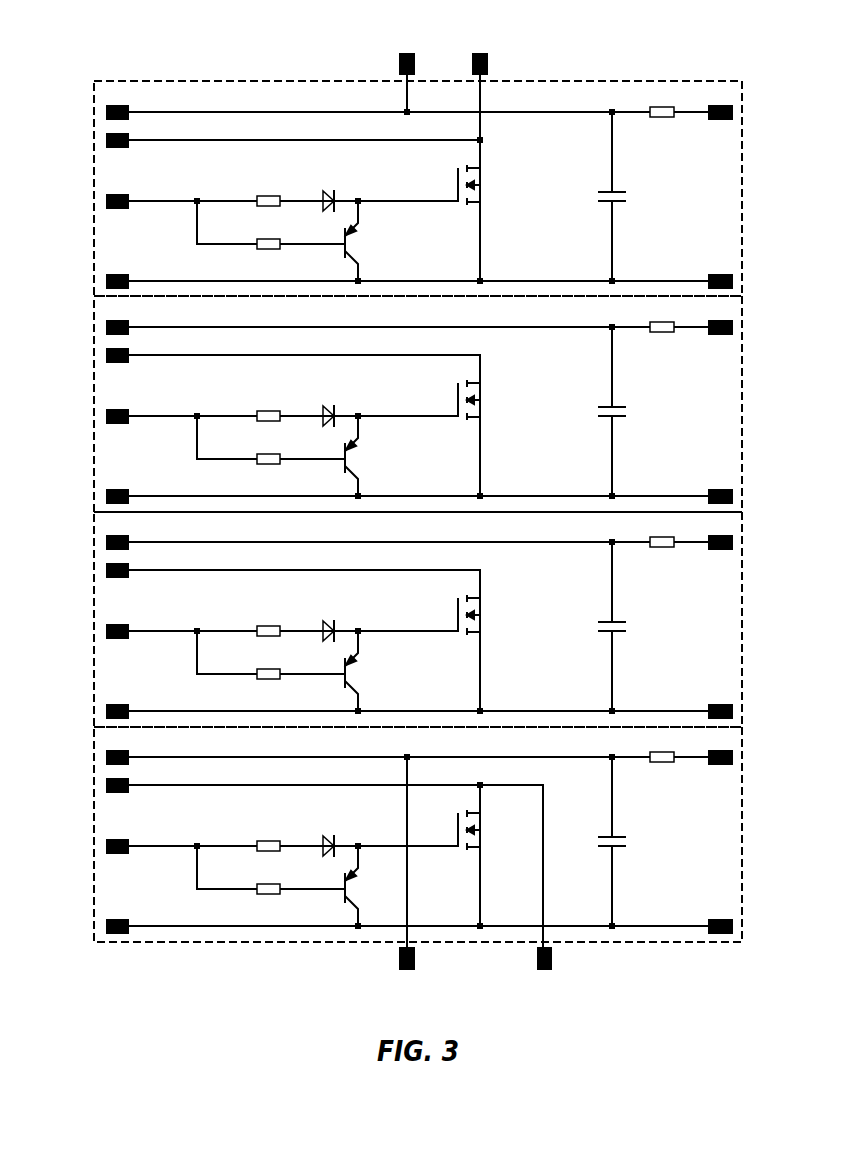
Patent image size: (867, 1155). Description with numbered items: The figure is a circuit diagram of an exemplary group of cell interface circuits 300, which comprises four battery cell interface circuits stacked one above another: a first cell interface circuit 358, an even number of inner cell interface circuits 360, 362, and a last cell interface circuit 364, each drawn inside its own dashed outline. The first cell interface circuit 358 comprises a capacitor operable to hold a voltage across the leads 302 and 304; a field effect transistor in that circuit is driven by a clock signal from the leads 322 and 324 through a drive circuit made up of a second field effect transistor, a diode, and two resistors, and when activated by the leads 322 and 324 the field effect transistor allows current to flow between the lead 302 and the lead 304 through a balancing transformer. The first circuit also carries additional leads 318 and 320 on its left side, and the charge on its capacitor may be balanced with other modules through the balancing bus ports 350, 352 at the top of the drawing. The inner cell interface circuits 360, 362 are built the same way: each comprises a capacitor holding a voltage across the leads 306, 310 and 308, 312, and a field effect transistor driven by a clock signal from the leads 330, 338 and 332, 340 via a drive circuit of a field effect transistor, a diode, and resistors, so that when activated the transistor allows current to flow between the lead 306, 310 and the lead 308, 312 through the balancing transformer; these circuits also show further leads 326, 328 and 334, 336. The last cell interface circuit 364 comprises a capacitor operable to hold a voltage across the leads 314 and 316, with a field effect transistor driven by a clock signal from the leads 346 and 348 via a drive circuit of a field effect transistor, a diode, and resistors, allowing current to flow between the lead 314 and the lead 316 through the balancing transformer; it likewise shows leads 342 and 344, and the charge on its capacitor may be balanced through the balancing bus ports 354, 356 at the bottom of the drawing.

The group of cell interface circuits 300 is at (151, 30).
The lead 302 is at (734, 108).
The lead 304 is at (734, 277).
The lead 306 is at (734, 323).
The lead 308 is at (734, 492).
The lead 310 is at (734, 538).
The lead 312 is at (734, 707).
The lead 314 is at (734, 753).
The lead 316 is at (734, 922).
The input terminal 318 is at (106, 108).
The input terminal 320 is at (106, 136).
The lead 322 is at (106, 197).
The lead 324 is at (106, 277).
The input terminal 326 is at (106, 323).
The input terminal 328 is at (106, 351).
The lead 330 is at (106, 412).
The lead 332 is at (106, 492).
The input terminal 334 is at (106, 538).
The input terminal 336 is at (106, 566).
The lead 338 is at (106, 627).
The lead 340 is at (106, 707).
The input terminal 342 is at (106, 753).
The input terminal 344 is at (106, 781).
The lead 346 is at (106, 842).
The lead 348 is at (106, 922).
The balancing bus port 350 is at (407, 53).
The balancing bus port 352 is at (480, 53).
The balancing bus port 354 is at (407, 971).
The balancing bus port 356 is at (544, 971).
The first cell interface circuit 358 is at (742, 165).
The inner cell interface circuit 360 is at (742, 380).
The inner cell interface circuit 362 is at (742, 595).
The last cell interface circuit 364 is at (742, 810).